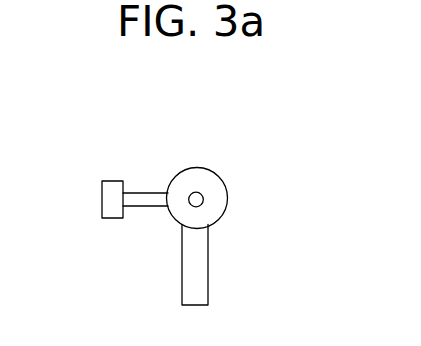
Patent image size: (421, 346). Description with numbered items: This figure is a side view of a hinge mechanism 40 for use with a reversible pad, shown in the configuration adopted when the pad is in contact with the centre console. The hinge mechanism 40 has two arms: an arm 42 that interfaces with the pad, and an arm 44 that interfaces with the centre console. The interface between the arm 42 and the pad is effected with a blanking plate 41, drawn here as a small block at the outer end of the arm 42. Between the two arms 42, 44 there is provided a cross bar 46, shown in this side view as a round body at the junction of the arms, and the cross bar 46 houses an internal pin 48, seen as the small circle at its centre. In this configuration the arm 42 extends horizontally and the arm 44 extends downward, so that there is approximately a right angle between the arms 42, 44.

The hinge mechanism 40 is at (300, 137).
The blanking plate 41 is at (110, 194).
The arm 42 is at (147, 195).
The arm 44 is at (199, 259).
The cross bar 46 is at (207, 180).
The internal pin 48 is at (203, 199).